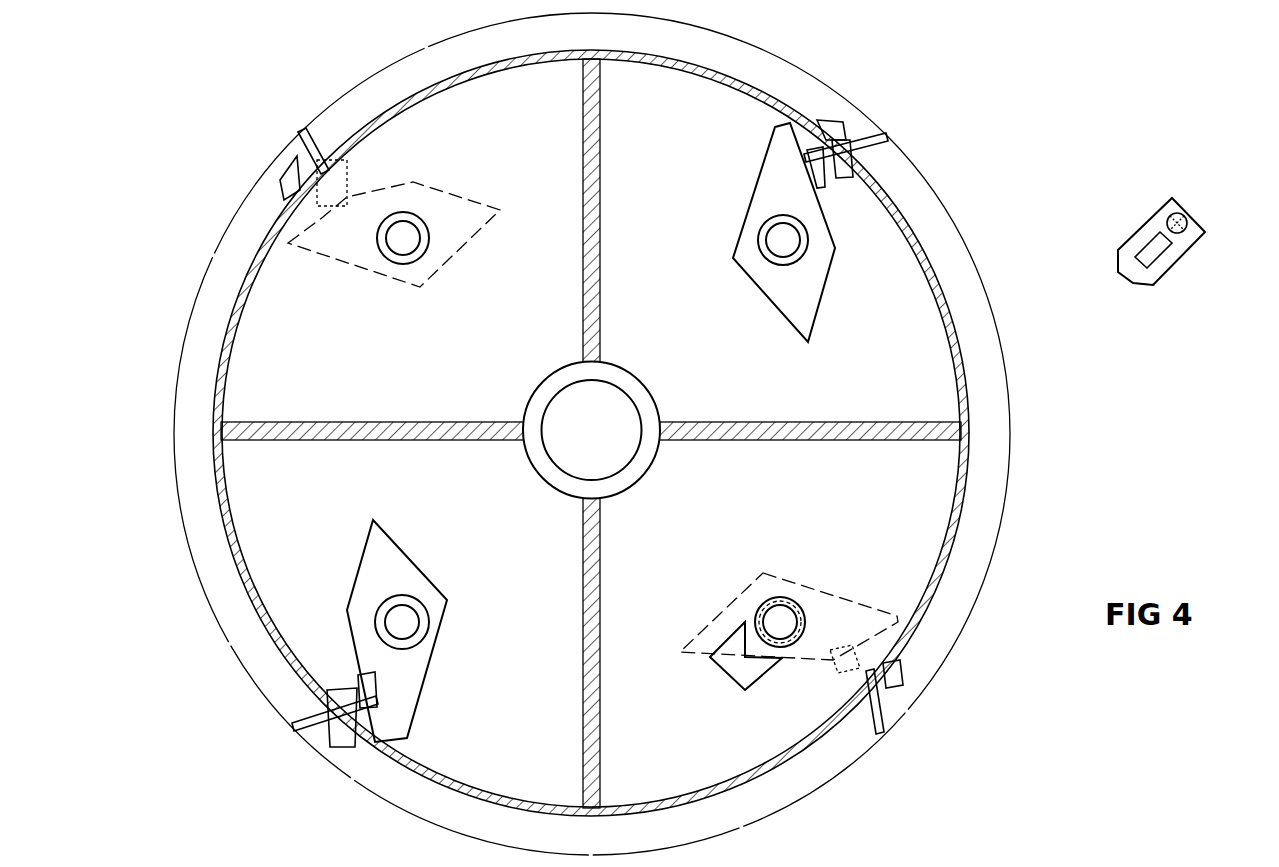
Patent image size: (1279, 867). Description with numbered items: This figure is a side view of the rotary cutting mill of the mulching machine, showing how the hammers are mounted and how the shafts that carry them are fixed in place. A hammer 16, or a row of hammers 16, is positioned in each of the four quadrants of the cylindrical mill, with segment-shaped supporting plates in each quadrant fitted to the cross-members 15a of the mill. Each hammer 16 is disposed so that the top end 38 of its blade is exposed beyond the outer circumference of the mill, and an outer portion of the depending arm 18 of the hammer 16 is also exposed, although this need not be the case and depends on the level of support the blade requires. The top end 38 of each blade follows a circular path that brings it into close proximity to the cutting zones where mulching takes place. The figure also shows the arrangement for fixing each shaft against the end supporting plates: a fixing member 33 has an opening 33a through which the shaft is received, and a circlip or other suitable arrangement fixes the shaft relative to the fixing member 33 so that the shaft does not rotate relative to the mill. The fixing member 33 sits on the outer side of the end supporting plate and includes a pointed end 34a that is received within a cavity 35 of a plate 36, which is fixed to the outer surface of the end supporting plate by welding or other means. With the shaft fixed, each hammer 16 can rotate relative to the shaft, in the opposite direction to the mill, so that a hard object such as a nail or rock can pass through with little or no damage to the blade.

The cross-members 15a is at (583, 330).
The hammer 16 is at (350, 240).
The depending arm 18 is at (284, 172).
The fixing member 33 is at (1185, 240).
The opening 33a is at (1172, 212).
The pointed end 34a is at (1133, 285).
The cavity 35 is at (803, 630).
The plate 36 is at (740, 680).
The top end 38 is at (300, 140).